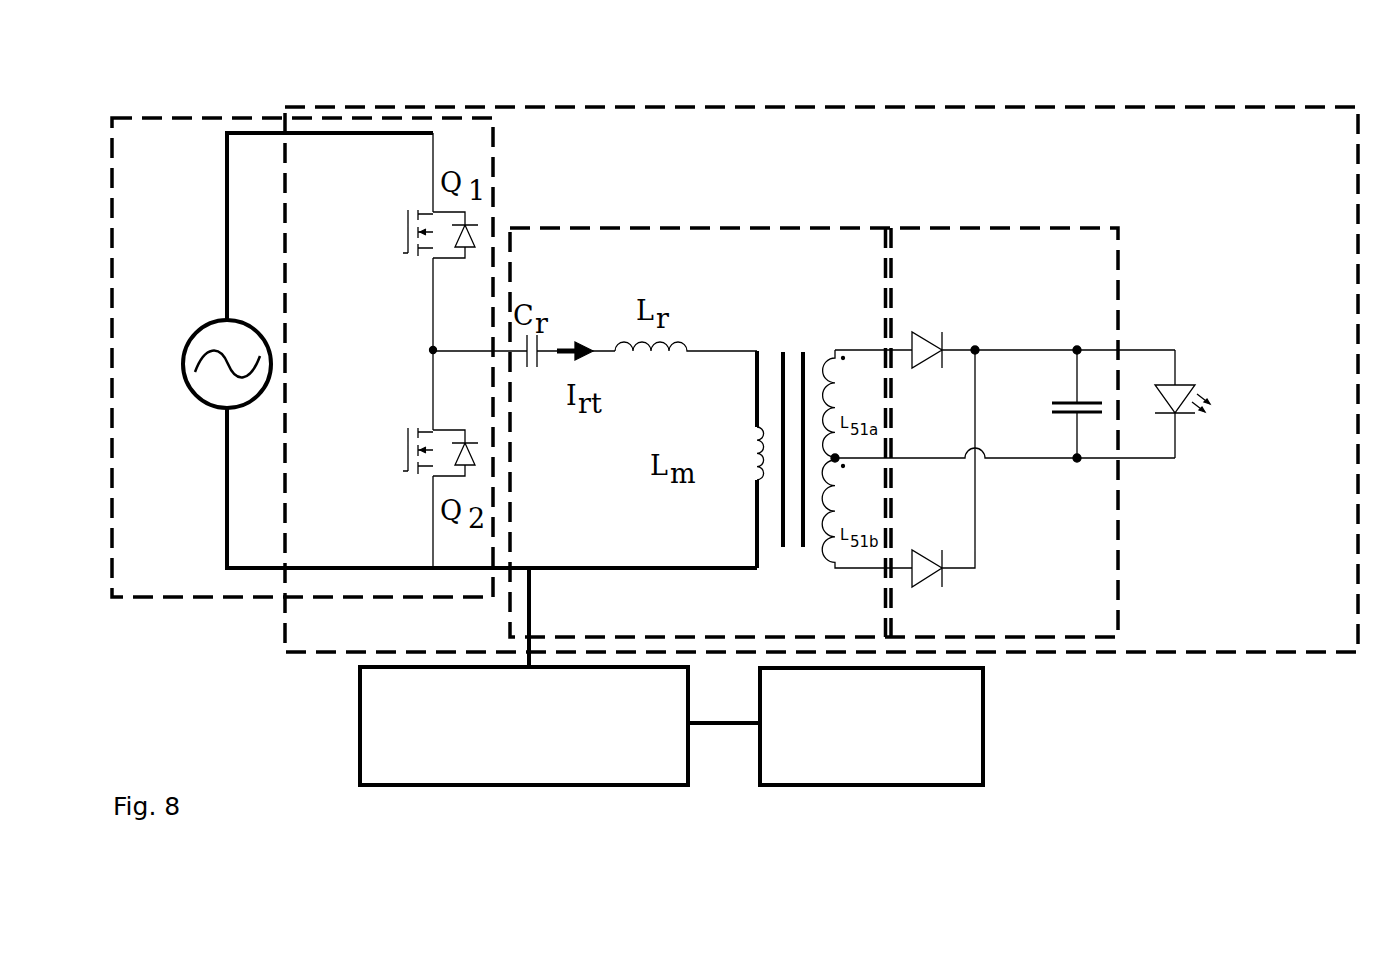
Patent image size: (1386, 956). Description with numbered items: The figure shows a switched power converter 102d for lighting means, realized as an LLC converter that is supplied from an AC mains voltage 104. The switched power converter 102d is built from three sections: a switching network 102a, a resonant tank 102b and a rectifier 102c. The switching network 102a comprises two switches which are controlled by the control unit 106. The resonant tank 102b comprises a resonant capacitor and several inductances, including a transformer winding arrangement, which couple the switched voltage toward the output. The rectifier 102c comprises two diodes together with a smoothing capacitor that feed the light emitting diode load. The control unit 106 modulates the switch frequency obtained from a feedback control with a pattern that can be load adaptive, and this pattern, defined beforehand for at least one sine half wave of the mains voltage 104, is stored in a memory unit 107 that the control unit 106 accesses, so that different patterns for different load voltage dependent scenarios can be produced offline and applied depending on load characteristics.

The switching network 102a is at (248, 597).
The resonant tank 102b is at (795, 229).
The rectifier 102c is at (1078, 632).
The switched power converter 102d is at (752, 105).
The supplying AC mains voltage 104 is at (188, 343).
The control unit 106 is at (358, 712).
The memory unit 107 is at (985, 748).